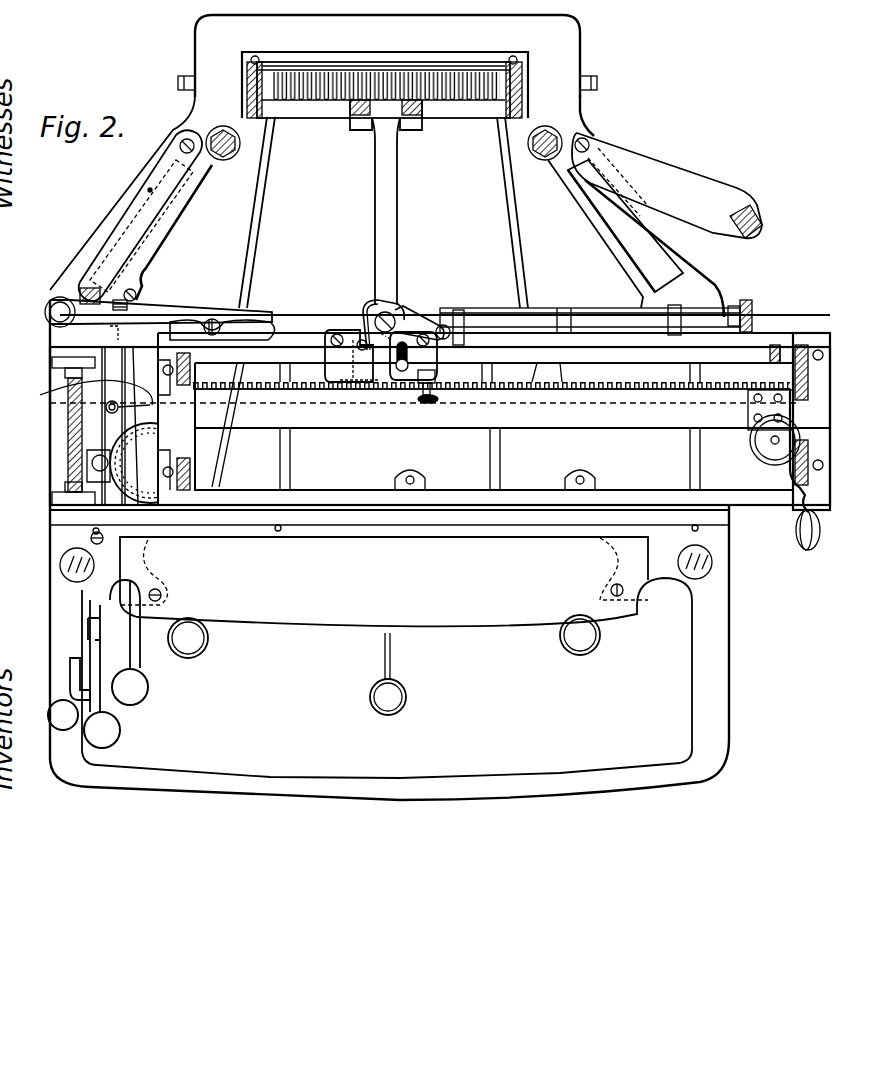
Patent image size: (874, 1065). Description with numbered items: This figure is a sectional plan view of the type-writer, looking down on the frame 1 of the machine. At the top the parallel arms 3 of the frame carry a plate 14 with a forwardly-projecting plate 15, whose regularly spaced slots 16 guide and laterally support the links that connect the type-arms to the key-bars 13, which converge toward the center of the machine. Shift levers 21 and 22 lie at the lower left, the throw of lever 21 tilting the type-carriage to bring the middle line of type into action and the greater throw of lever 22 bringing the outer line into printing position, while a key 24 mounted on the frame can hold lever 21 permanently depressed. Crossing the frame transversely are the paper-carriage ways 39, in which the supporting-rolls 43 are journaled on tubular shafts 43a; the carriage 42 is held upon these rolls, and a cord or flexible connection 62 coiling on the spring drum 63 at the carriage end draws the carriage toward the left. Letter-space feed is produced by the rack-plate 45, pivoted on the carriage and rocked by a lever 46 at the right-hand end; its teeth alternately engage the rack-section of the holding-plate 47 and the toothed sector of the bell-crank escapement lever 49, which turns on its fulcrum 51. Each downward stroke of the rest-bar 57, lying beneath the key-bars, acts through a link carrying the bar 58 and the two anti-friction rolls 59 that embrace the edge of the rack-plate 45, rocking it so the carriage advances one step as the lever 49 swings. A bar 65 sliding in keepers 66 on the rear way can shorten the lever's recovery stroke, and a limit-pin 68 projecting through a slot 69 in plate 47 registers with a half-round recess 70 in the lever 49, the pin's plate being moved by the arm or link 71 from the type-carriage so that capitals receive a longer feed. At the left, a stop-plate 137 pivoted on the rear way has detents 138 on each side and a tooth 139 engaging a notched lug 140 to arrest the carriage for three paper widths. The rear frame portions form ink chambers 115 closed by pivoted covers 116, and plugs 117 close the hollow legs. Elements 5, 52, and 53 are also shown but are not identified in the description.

The frame 1 is at (50, 296).
The arms 3 is at (305, 112).
The lugs 5 is at (178, 83).
The key-bars 13 is at (392, 212).
The plate 14 is at (258, 58).
The forwardly-projecting plate 15 is at (312, 66).
The slots 16 is at (350, 72).
The lever 21 is at (112, 674).
The lever 22 is at (355, 647).
The key 24 is at (74, 674).
The paper-carriage ways 39 is at (440, 421).
The carriage 42 is at (801, 421).
The supporting-rolls 43 is at (52, 362).
The tubular shafts 43a is at (322, 465).
The rack-plate 45 is at (492, 408).
The lever 46 is at (820, 532).
The holding-plate 47 is at (352, 356).
The escapement or spacing lever 49 is at (412, 316).
The fulcrum 51 is at (392, 311).
The spring 52 is at (366, 310).
The stop pin 53 is at (361, 363).
The rest-bar 57 is at (222, 376).
The bar 58 is at (436, 378).
The anti-friction rolls 59 is at (425, 403).
The flexible connection 62 is at (42, 395).
The drum 63 is at (760, 458).
The bar or plate 65 is at (538, 320).
The keepers 66 is at (459, 310).
The limit-pin 68 is at (413, 356).
The slot 69 is at (405, 345).
The half-round recess 70 is at (374, 344).
The arm or link 71 is at (393, 280).
The chambers 115 is at (625, 226).
The covers 116 is at (420, 215).
The plugs 117 is at (386, 563).
The stop-plate 137 is at (168, 316).
The detent 138 is at (265, 320).
The tooth 139 is at (140, 300).
The lug 140 is at (109, 337).